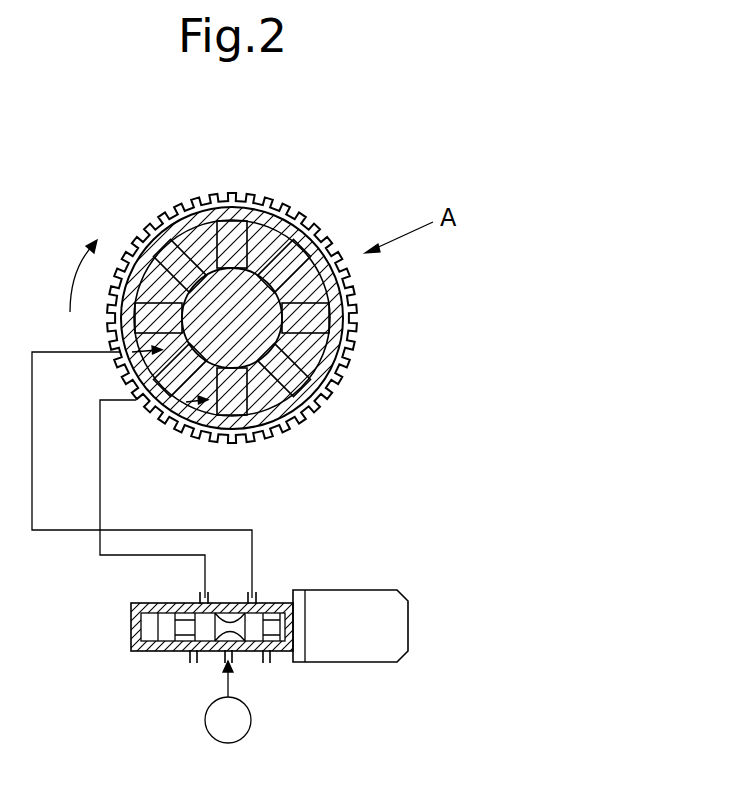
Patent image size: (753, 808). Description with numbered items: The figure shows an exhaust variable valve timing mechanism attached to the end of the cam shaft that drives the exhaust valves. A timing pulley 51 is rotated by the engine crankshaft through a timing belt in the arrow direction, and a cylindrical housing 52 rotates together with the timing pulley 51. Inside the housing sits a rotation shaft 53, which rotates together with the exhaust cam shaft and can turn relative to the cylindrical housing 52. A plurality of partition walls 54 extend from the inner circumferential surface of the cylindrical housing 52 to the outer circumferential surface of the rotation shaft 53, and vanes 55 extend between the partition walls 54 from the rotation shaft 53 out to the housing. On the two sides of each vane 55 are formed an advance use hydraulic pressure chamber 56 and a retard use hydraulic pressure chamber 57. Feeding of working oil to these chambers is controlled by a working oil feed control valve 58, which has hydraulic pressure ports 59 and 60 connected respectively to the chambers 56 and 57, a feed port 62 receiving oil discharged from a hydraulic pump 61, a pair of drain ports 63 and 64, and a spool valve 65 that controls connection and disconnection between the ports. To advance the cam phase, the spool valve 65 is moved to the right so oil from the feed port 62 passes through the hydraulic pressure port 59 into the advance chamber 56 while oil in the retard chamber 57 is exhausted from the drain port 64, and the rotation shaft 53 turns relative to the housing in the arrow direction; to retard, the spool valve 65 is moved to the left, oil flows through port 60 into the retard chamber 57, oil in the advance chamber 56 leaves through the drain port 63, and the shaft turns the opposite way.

The timing pulley 51 is at (335, 352).
The cylindrical housing 52 is at (318, 405).
The rotation shaft 53 is at (252, 266).
The partition walls 54 is at (182, 250).
The vanes 55 is at (162, 243).
The advance use hydraulic pressure chamber 56 is at (301, 341).
The retard use hydraulic pressure chamber 57 is at (165, 350).
The working oil feed control valve 58 is at (389, 584).
The hydraulic pressure port 59 is at (258, 600).
The hydraulic pressure port 60 is at (200, 600).
The hydraulic pump 61 is at (252, 722).
The feed port 62 is at (226, 660).
The drain port 63 is at (270, 655).
The drain port 64 is at (192, 656).
The spool valve 65 is at (158, 628).